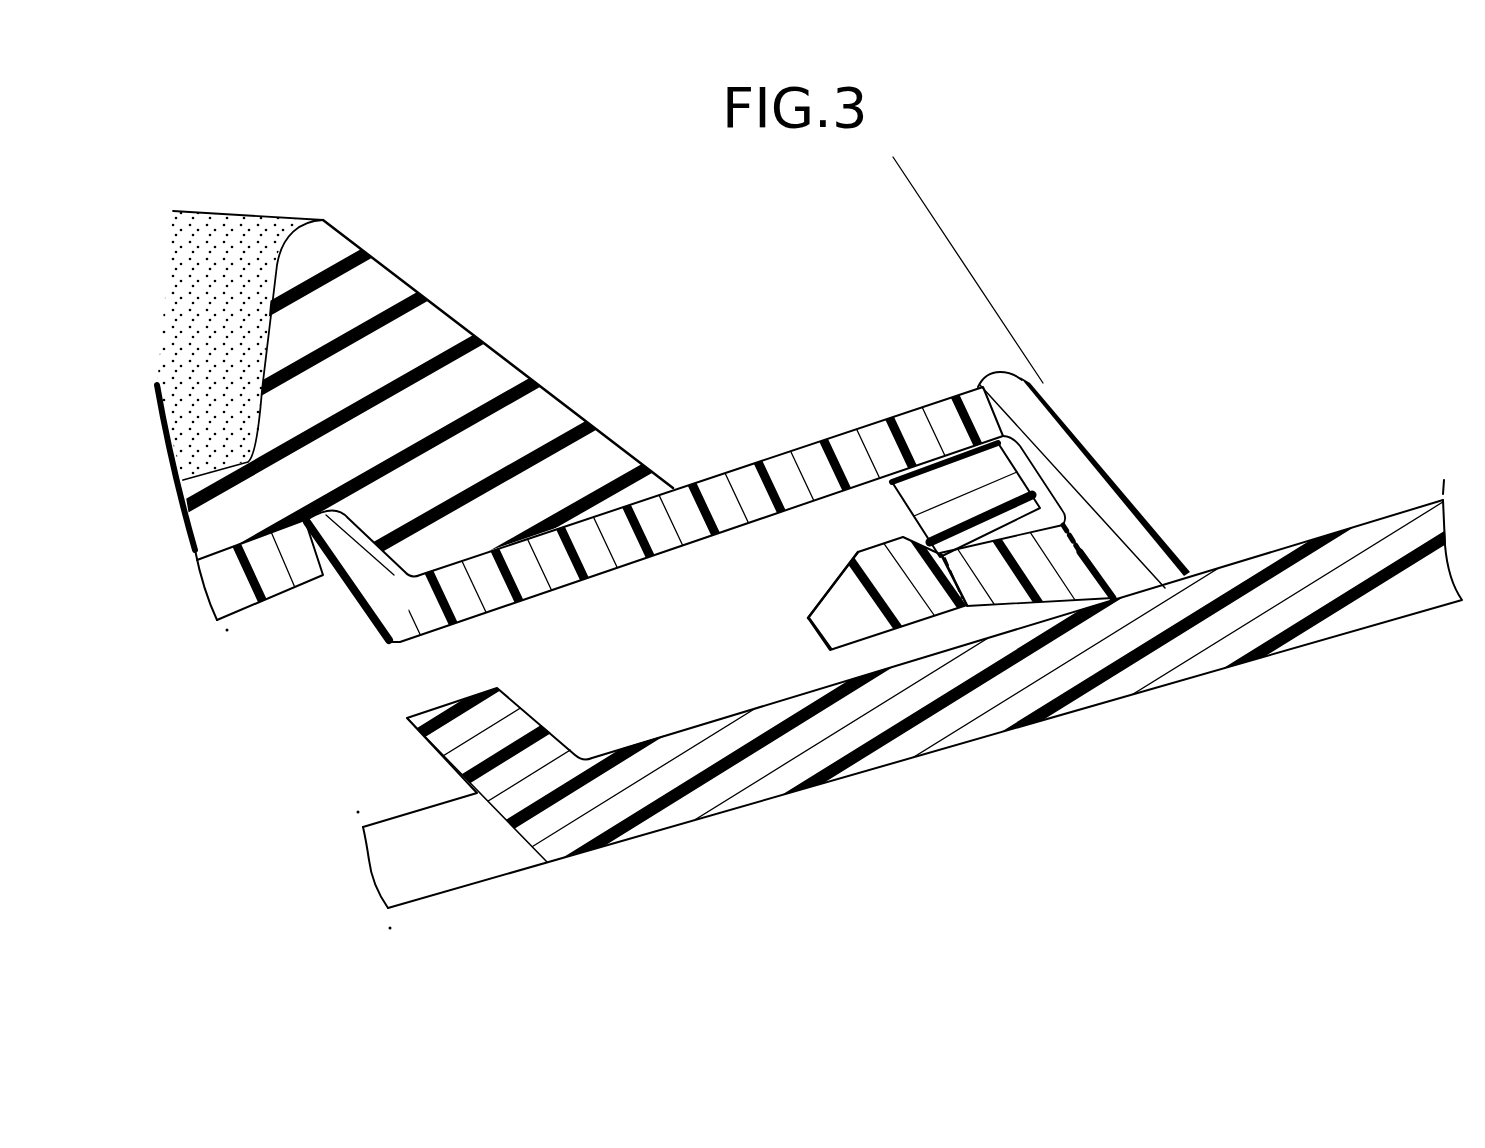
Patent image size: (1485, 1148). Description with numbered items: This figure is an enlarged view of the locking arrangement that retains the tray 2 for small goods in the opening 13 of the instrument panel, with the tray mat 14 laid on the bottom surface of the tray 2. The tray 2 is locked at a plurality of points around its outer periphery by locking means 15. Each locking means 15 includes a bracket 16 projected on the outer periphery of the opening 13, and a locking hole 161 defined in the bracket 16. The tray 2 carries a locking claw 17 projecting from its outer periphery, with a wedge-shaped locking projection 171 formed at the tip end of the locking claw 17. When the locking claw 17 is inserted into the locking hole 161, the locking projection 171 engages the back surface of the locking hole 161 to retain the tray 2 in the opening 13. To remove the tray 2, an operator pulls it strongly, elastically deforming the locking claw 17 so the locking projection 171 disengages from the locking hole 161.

The tray 2 is at (572, 396).
The opening 13 is at (1322, 532).
The tray mat 14 is at (217, 242).
The locking means 15 is at (1114, 394).
The bracket 16 is at (886, 509).
The locking hole 161 is at (1007, 615).
The locking claw 17 is at (808, 642).
The locking projection 171 is at (836, 591).